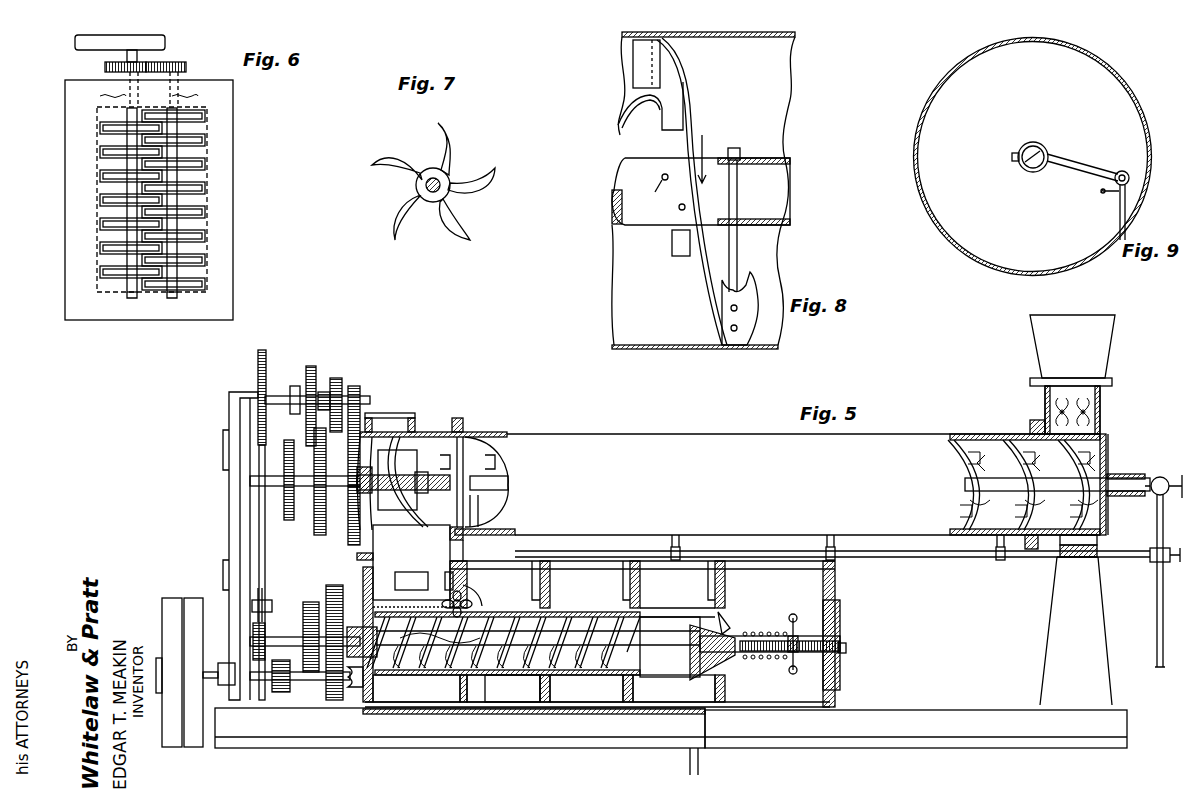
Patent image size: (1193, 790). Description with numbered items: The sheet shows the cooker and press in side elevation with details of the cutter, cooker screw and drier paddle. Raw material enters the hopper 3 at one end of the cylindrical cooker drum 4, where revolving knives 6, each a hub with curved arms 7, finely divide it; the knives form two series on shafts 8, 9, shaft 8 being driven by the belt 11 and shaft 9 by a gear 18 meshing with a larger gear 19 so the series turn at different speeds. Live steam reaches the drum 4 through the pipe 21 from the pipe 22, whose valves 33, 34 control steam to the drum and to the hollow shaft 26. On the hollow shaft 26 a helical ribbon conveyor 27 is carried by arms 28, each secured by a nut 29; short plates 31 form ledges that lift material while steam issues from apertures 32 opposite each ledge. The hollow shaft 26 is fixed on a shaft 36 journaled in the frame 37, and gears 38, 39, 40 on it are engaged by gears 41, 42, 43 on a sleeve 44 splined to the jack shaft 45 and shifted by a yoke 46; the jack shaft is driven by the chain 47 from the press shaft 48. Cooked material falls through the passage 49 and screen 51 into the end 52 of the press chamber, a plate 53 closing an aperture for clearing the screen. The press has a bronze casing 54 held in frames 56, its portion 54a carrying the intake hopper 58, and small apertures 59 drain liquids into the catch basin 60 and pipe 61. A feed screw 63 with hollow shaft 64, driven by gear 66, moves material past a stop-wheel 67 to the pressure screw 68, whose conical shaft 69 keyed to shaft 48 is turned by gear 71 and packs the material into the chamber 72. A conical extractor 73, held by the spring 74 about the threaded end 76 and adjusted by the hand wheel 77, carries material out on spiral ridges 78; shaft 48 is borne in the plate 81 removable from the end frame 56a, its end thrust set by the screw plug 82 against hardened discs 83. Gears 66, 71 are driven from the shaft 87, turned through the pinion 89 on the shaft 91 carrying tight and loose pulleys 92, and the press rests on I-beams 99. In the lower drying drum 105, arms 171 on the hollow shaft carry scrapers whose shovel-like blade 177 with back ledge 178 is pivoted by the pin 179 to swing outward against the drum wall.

In FIG. 6, the hopper 3 is at (233, 156).
In FIG. 5, the hopper 3 is at (1092, 360).
In FIG. 8, the cooker drum 4 is at (762, 40).
In FIG. 5, the cooker drum 4 is at (785, 509).
In FIG. 5, the revolving knives 6 is at (1050, 408).
In FIG. 6, the curved arms 7 is at (205, 141).
In FIG. 7, the curved arms 7 is at (455, 154).
In FIG. 6, the shaft 8 is at (105, 95).
In FIG. 6, the shaft 9 is at (193, 95).
In FIG. 6, the belt 11 is at (88, 38).
In FIG. 6, the gear 18 is at (182, 66).
In FIG. 6, the gear 19 is at (105, 67).
In FIG. 5, the pipe 21 is at (742, 562).
In FIG. 5, the pipe 22 is at (1157, 612).
In FIG. 8, the hollow shaft 26 is at (780, 184).
In FIG. 9, the hollow shaft 26 is at (1028, 146).
In FIG. 5, the hollow shaft 26 is at (965, 486).
In FIG. 8, the ribbon conveyor 27 is at (700, 308).
In FIG. 5, the ribbon conveyor 27 is at (958, 451).
In FIG. 8, the arms 28 is at (737, 247).
In FIG. 5, the arms 28 is at (482, 500).
In FIG. 8, the nut 29 is at (740, 150).
In FIG. 9, the nut 29 is at (1016, 160).
In FIG. 8, the short plates 31 is at (670, 122).
In FIG. 5, the short plates 31 is at (1020, 502).
In FIG. 8, the apertures 32 is at (679, 207).
In FIG. 5, the valve 33 is at (1159, 477).
In FIG. 5, the valve 34 is at (1150, 555).
In FIG. 5, the shaft 36 is at (397, 478).
In FIG. 5, the frame 37 is at (236, 450).
In FIG. 5, the gear 38 is at (288, 521).
In FIG. 5, the gear 39 is at (318, 537).
In FIG. 5, the gear 40 is at (352, 546).
In FIG. 5, the gear 41 is at (311, 365).
In FIG. 5, the gear 42 is at (344, 377).
In FIG. 5, the gear 43 is at (358, 391).
In FIG. 5, the sleeve 44 is at (325, 390).
In FIG. 5, the jack shaft 45 is at (268, 395).
In FIG. 5, the yoke 46 is at (295, 385).
In FIG. 5, the chain 47 is at (258, 520).
In FIG. 5, the shaft 48 is at (285, 641).
In FIG. 5, the passage 49 is at (455, 532).
In FIG. 5, the screen 51 is at (402, 607).
In FIG. 5, the end of the press chamber 52 is at (400, 676).
In FIG. 5, the plate 53 is at (411, 582).
In FIG. 5, the casing 54 is at (508, 620).
In FIG. 5, the portion of the casing 54a is at (430, 670).
In FIG. 5, the frames 56 is at (548, 592).
In FIG. 5, the end frame 56a is at (835, 592).
In FIG. 5, the intake hopper 58 is at (440, 583).
In FIG. 5, the apertures 59 is at (686, 584).
In FIG. 5, the catch basin 60 is at (548, 734).
In FIG. 5, the pipe 61 is at (698, 770).
In FIG. 5, the feed screw 63 is at (482, 676).
In FIG. 5, the hollow shaft 64 is at (520, 676).
In FIG. 5, the gear 66 is at (335, 700).
In FIG. 5, the stop-wheel 67 is at (463, 596).
In FIG. 5, the pressure screw 68 is at (604, 676).
In FIG. 5, the conical shaft 69 is at (670, 649).
In FIG. 5, the gear 71 is at (311, 602).
In FIG. 5, the chamber 72 is at (657, 676).
In FIG. 5, the extractor 73 is at (730, 628).
In FIG. 5, the spring 74 is at (766, 664).
In FIG. 5, the threaded end 76 is at (805, 667).
In FIG. 5, the hand wheel 77 is at (793, 614).
In FIG. 5, the spirally-disposed ridges 78 is at (726, 612).
In FIG. 5, the plate 81 is at (840, 628).
In FIG. 5, the screw plug 82 is at (842, 646).
In FIG. 5, the hardened discs 83 is at (845, 654).
In FIG. 5, the shaft 87 is at (265, 600).
In FIG. 5, the pinion 89 is at (282, 692).
In FIG. 5, the shaft 91 is at (303, 680).
In FIG. 5, the tight and loose pulleys 92 is at (190, 604).
In FIG. 5, the I-beams 99 is at (958, 742).
In FIG. 9, the drum 105 is at (952, 74).
In FIG. 9, the arms 171 is at (1064, 158).
In FIG. 9, the blade 177 is at (1119, 220).
In FIG. 9, the ledge 178 is at (1103, 194).
In FIG. 9, the pin 179 is at (1128, 168).